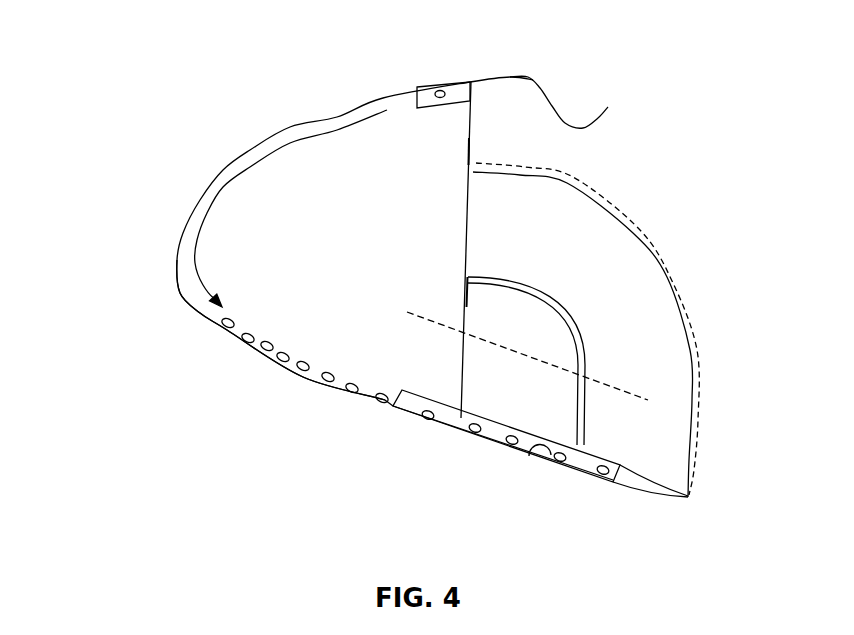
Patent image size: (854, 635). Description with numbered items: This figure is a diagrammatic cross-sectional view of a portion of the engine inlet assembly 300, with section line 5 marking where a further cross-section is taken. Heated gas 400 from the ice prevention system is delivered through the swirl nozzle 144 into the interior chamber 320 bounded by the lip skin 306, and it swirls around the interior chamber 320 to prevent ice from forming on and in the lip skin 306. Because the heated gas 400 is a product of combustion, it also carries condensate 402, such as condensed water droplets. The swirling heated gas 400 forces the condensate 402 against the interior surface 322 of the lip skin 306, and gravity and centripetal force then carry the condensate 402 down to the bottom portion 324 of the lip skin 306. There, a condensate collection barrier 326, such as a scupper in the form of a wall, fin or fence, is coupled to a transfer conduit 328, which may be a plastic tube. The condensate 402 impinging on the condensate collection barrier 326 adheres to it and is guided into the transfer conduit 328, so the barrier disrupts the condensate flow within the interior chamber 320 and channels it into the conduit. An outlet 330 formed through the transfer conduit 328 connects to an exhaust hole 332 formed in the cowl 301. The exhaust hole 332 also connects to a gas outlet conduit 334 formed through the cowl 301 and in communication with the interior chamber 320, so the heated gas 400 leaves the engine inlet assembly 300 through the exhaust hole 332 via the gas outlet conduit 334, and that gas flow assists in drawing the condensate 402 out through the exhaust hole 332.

The engine inlet assembly 300 is at (156, 63).
The cowl 301 is at (517, 75).
The lip skin 306 is at (290, 127).
The interior chamber 320 is at (295, 228).
The interior surface 322 is at (227, 333).
The bottom portion 324 is at (297, 373).
The condensate collection barrier 326 is at (407, 413).
The transfer conduit 328 is at (480, 413).
The outlet 330 is at (540, 454).
The exhaust hole 332 is at (632, 490).
The gas outlet conduit 334 is at (667, 267).
The heated gas 400 is at (193, 228).
The condensate 402 is at (248, 342).
The swirl nozzle 144 is at (432, 84).
The section line 5- 5 is at (385, 361).